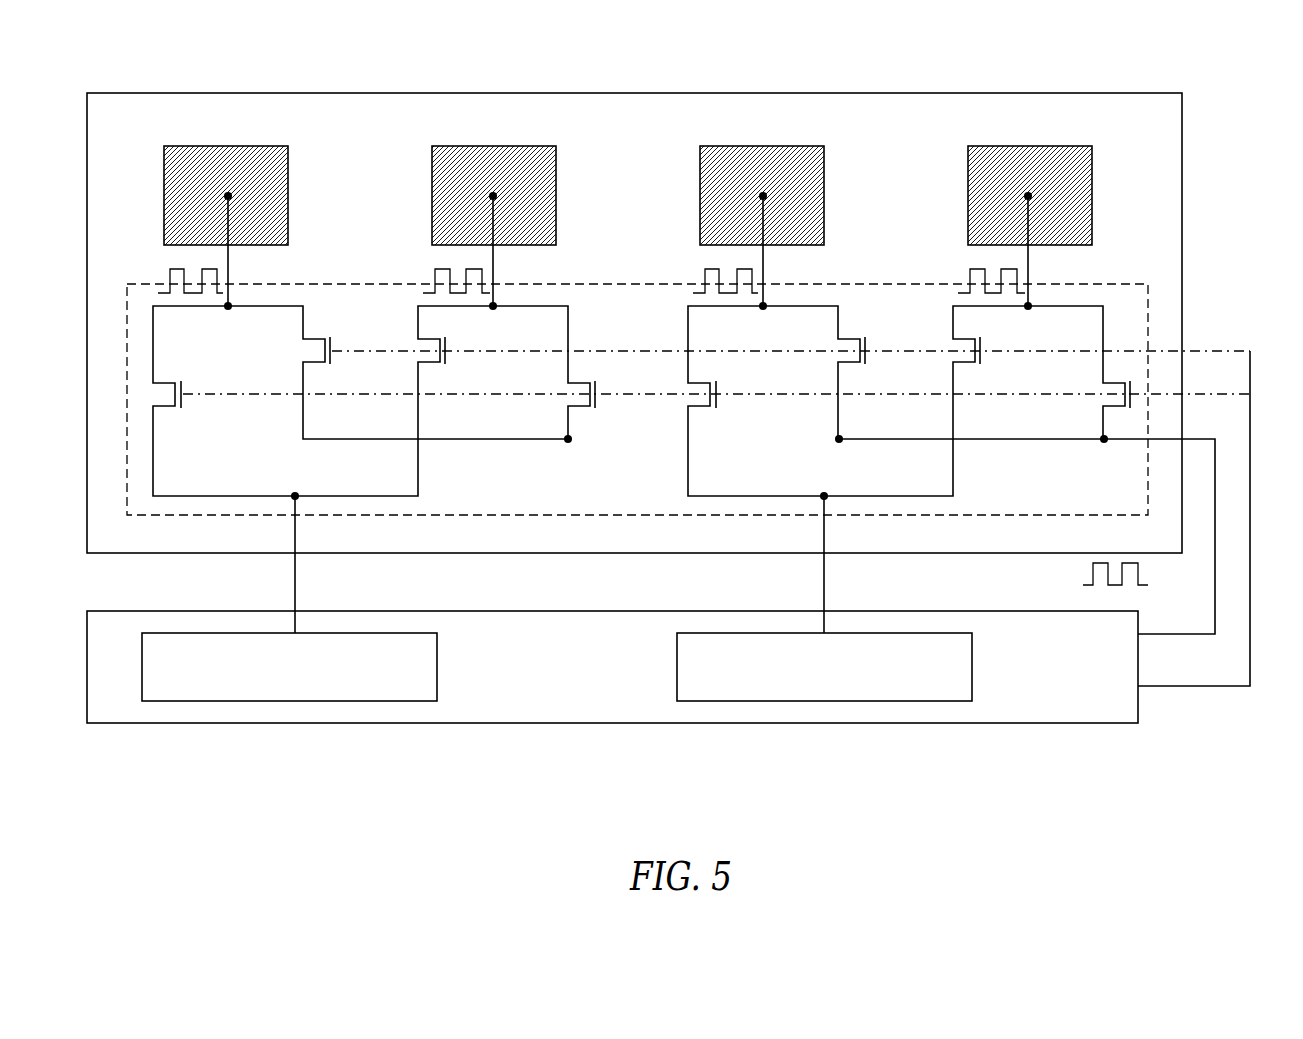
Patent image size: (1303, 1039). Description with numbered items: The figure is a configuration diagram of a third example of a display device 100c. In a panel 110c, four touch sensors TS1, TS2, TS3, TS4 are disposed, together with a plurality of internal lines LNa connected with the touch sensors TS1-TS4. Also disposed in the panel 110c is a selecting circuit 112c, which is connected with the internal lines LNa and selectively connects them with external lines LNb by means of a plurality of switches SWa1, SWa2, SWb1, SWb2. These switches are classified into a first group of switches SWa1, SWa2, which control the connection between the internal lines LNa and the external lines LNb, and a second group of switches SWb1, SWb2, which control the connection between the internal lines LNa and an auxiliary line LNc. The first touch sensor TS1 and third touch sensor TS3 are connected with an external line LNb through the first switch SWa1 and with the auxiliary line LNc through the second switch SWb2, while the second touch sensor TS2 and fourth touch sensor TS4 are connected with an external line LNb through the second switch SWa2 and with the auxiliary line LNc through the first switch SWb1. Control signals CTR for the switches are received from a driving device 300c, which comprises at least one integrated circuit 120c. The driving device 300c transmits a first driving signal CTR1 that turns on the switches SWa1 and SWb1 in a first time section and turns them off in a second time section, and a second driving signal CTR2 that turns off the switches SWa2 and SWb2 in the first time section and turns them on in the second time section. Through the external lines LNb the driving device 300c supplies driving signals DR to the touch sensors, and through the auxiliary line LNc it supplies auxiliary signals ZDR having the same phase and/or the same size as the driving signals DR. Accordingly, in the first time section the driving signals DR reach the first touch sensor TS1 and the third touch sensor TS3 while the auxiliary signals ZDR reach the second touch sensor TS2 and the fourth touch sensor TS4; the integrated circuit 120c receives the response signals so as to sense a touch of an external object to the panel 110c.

The display device 100c is at (177, 61).
The panel 110c is at (622, 93).
The selecting circuit 112c is at (1148, 303).
The first touch sensor TS1 is at (228, 146).
The second touch sensor TS2 is at (493, 146).
The third touch sensor TS3 is at (763, 146).
The fourth touch sensor TS4 is at (1028, 146).
The internal line LNa is at (1032, 270).
The external line LNb is at (294, 588).
The auxiliary line LNc is at (1180, 634).
The driving signal DR is at (448, 269).
The auxiliary signal ZDR is at (802, 417).
The first switch of the first group SWa1 is at (403, 401).
The second switch of the first group SWa2 is at (655, 362).
The first switch of the second group SWb1 is at (809, 401).
The second switch of the second group SWb2 is at (518, 374).
The first driving signal CTR1 is at (716, 411).
The second driving signal CTR2 is at (791, 368).
The control signal CTR is at (1201, 538).
The integrated circuit 120c is at (300, 701).
The driving device 300c is at (605, 723).